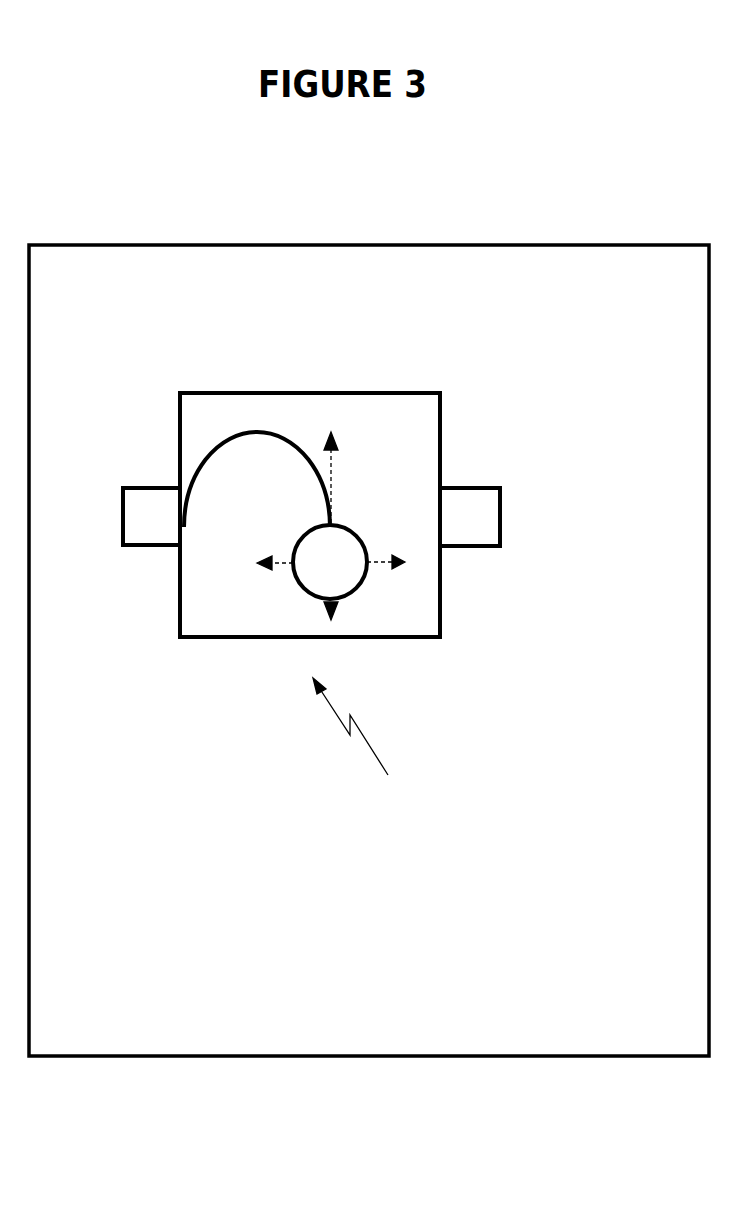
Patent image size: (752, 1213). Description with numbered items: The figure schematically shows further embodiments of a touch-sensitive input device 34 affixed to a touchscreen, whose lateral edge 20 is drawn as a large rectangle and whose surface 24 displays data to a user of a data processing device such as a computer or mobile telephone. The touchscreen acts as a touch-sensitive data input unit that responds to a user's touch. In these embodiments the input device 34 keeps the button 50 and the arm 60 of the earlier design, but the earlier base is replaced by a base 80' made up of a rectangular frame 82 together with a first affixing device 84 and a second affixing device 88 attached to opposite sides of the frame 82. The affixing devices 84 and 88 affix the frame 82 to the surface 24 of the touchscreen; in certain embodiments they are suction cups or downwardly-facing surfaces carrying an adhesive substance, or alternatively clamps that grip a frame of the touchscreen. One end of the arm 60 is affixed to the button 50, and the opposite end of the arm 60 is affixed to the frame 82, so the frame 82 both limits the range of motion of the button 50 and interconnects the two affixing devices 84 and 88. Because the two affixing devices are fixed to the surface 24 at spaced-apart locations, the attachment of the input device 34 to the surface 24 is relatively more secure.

The lateral edge of the touchscreen 20 is at (30, 845).
The surface 24 is at (298, 882).
The touch-sensitive input device 34 is at (372, 737).
The button 50 is at (350, 545).
The arm 60 is at (313, 470).
The base 80' is at (310, 466).
The rectangular frame 82 is at (403, 640).
The first affixing device 84 is at (138, 488).
The second affixing device 88 is at (502, 522).